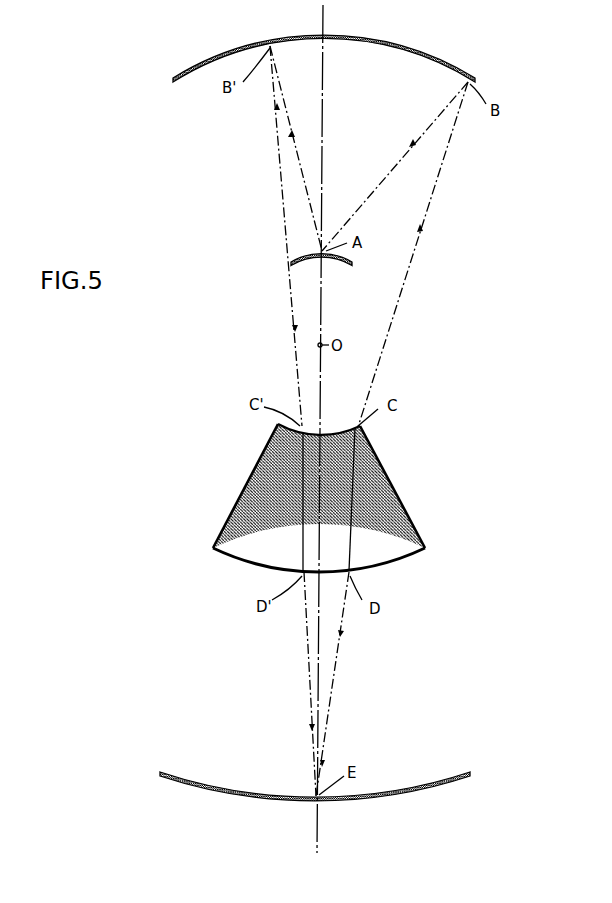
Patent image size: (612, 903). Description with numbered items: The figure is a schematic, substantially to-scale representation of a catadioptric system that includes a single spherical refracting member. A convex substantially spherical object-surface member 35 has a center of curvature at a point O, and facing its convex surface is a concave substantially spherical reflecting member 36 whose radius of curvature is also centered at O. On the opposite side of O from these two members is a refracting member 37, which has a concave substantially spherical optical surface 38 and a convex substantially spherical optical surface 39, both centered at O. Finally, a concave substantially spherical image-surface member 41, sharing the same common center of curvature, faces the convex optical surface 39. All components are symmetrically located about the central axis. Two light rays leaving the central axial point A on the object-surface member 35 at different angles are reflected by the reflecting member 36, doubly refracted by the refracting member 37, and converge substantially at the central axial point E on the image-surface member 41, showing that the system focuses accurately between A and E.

The object-surface member 35 is at (348, 266).
The reflecting member 36 is at (214, 58).
The refracting member 37 is at (323, 474).
The concave substantially spherical optical surface 38 is at (334, 432).
The convex substantially spherical optical surface 39 is at (222, 552).
The image-surface member 41 is at (456, 776).